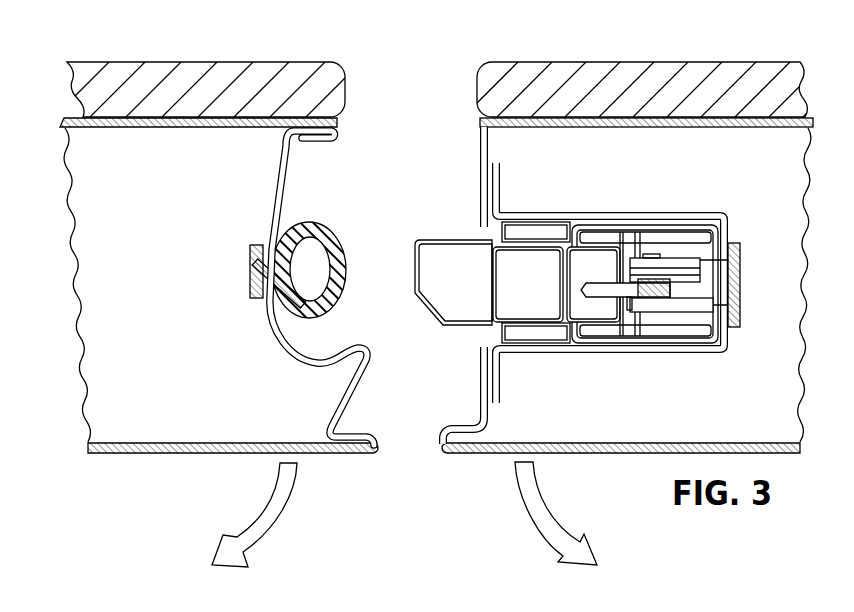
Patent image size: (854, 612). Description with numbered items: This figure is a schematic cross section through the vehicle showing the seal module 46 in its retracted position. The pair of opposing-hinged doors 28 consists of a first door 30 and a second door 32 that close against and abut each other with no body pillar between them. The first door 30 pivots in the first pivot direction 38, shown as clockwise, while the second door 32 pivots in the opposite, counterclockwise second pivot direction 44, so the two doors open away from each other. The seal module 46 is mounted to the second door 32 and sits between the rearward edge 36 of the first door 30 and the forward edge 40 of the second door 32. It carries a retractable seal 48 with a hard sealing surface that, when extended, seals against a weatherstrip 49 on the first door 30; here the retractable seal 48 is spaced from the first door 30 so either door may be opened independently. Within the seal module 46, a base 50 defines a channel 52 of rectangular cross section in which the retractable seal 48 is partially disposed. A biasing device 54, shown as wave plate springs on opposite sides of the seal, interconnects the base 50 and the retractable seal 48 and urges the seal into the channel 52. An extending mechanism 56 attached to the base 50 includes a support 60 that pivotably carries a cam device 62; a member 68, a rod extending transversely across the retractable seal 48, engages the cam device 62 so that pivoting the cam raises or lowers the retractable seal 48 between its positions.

The pair of opposing-hinged doors 28 is at (435, 54).
The first door 30 is at (207, 453).
The second door 32 is at (575, 452).
The rearward edge 36 is at (292, 152).
The first pivot direction 38 is at (290, 498).
The forward edge 40 is at (480, 143).
The second pivot direction 44 is at (518, 500).
The seal module 46 is at (600, 212).
The retractable seal 48 is at (435, 240).
The weatherstrip 49 is at (312, 220).
The base 50 is at (693, 224).
The channel 52 is at (673, 333).
The biasing device 54 is at (529, 232).
The extending mechanism 56 is at (698, 310).
The support 60 is at (693, 262).
The cam device 62 is at (660, 272).
The member 68 is at (620, 332).